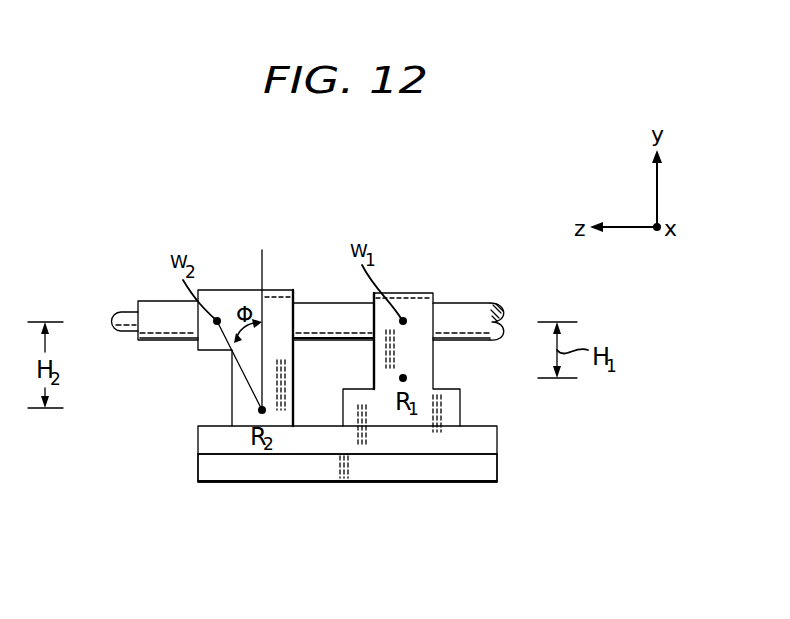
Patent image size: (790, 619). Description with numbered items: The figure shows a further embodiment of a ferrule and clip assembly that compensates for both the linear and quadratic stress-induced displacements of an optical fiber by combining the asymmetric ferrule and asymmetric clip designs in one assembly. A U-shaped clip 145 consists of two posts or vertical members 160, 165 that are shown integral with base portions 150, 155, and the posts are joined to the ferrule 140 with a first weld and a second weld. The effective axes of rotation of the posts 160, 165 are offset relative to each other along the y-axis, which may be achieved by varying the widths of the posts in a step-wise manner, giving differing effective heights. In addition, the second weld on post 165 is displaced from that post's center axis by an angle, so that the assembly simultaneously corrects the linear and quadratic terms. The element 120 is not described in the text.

The pin 120 is at (130, 310).
The ferrule 140 is at (327, 303).
The U-shaped clip 145 is at (363, 383).
The base portion 150 is at (492, 470).
The base portion 155 is at (347, 468).
The post 160 is at (398, 292).
The post 165 is at (228, 403).